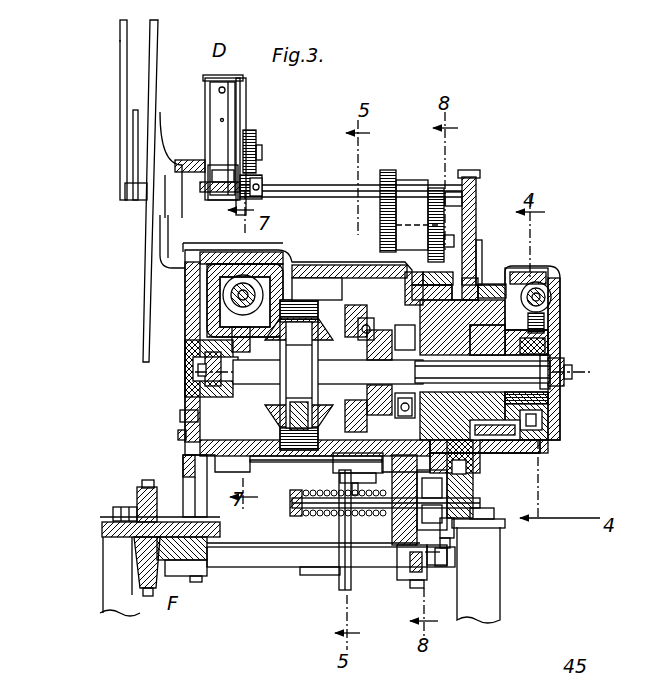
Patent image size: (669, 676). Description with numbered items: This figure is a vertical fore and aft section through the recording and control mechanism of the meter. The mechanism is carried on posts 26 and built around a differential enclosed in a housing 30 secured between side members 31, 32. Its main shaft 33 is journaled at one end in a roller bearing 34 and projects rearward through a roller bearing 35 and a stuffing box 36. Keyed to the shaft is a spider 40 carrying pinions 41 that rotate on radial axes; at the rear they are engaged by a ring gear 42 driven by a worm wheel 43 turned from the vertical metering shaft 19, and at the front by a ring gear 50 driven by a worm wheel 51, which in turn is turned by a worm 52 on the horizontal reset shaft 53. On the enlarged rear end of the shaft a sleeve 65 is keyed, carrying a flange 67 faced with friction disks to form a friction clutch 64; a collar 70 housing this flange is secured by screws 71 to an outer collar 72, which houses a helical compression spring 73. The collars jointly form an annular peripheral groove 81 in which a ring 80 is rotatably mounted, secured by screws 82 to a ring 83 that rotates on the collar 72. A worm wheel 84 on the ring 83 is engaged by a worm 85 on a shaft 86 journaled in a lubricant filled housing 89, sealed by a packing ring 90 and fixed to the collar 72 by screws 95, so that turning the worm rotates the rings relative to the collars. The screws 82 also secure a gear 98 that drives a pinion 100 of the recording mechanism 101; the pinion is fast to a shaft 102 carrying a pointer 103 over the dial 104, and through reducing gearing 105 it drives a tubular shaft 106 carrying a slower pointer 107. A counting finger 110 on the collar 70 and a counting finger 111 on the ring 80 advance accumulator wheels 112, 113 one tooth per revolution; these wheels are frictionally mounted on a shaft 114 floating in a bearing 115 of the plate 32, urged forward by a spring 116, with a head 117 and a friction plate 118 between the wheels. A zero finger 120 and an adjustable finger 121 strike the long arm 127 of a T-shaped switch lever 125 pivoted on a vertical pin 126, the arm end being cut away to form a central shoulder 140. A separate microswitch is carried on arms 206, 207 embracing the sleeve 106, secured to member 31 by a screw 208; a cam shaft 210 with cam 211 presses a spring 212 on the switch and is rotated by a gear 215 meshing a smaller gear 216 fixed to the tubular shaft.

The recording mechanism 101 is at (80, 173).
The pointer 103 is at (122, 103).
The dial 104 is at (158, 40).
The reducing gearing 105 is at (399, 170).
The tubular shaft 106 is at (368, 192).
The pointer 107 is at (134, 142).
The pinion 100 is at (468, 177).
The shaft 102 is at (477, 230).
The gear 98 is at (478, 250).
The ring 80 is at (472, 277).
The screws 82 is at (490, 283).
The housing 89 is at (540, 293).
The shaft 86 is at (553, 280).
The worm 85 is at (550, 298).
The worm wheel 84 is at (546, 320).
The flange 67 is at (548, 334).
The helical compression spring 73 is at (553, 346).
The sleeve 65 is at (557, 360).
The main shaft 33 is at (570, 378).
The screws 95 is at (553, 406).
The outer collar 72 is at (553, 420).
The ring 83 is at (553, 430).
The sealing ring 90 is at (500, 453).
The annular peripheral groove 81 is at (480, 472).
The counting finger 111 is at (460, 495).
The counting finger 110 is at (458, 484).
The head 117 is at (470, 530).
The accumulator wheel 113 is at (462, 542).
The adjustable finger 121 is at (455, 552).
The zero finger 120 is at (450, 568).
The posts 26 is at (498, 615).
The central shoulder 140 is at (425, 552).
The side member 32 is at (400, 588).
The metering shaft 19 is at (342, 588).
The accumulator wheel 112 is at (400, 550).
The spring 116 is at (318, 548).
The friction plate 118 is at (405, 512).
The bearing 115 is at (387, 499).
The long arm 127 is at (312, 572).
The shaft 114 is at (300, 505).
The pinions 41 is at (297, 307).
The ring gear 42 is at (300, 448).
The ring gear 50 is at (267, 290).
The worm wheel 43 is at (355, 310).
The worm wheel 51 is at (180, 432).
The housing 30 is at (185, 452).
The side member 31 is at (183, 488).
The roller bearing 34 is at (190, 365).
The reset shaft 53 is at (215, 295).
The worm 52 is at (195, 268).
The screw 208 is at (160, 240).
The cam 211 is at (213, 167).
The cam shaft 210 is at (205, 155).
The spring 212 is at (222, 100).
The arm 206 is at (205, 80).
The arm 207 is at (242, 77).
The gear 215 is at (256, 142).
The gear 216 is at (262, 196).
The spider 40 is at (328, 375).
The roller bearing 35 is at (373, 322).
The stuffing box 36 is at (402, 391).
The friction clutch 64 is at (443, 370).
The collar 70 is at (432, 288).
The screws 71 is at (452, 290).
The switch lever 125 is at (240, 570).
The pin 126 is at (150, 598).